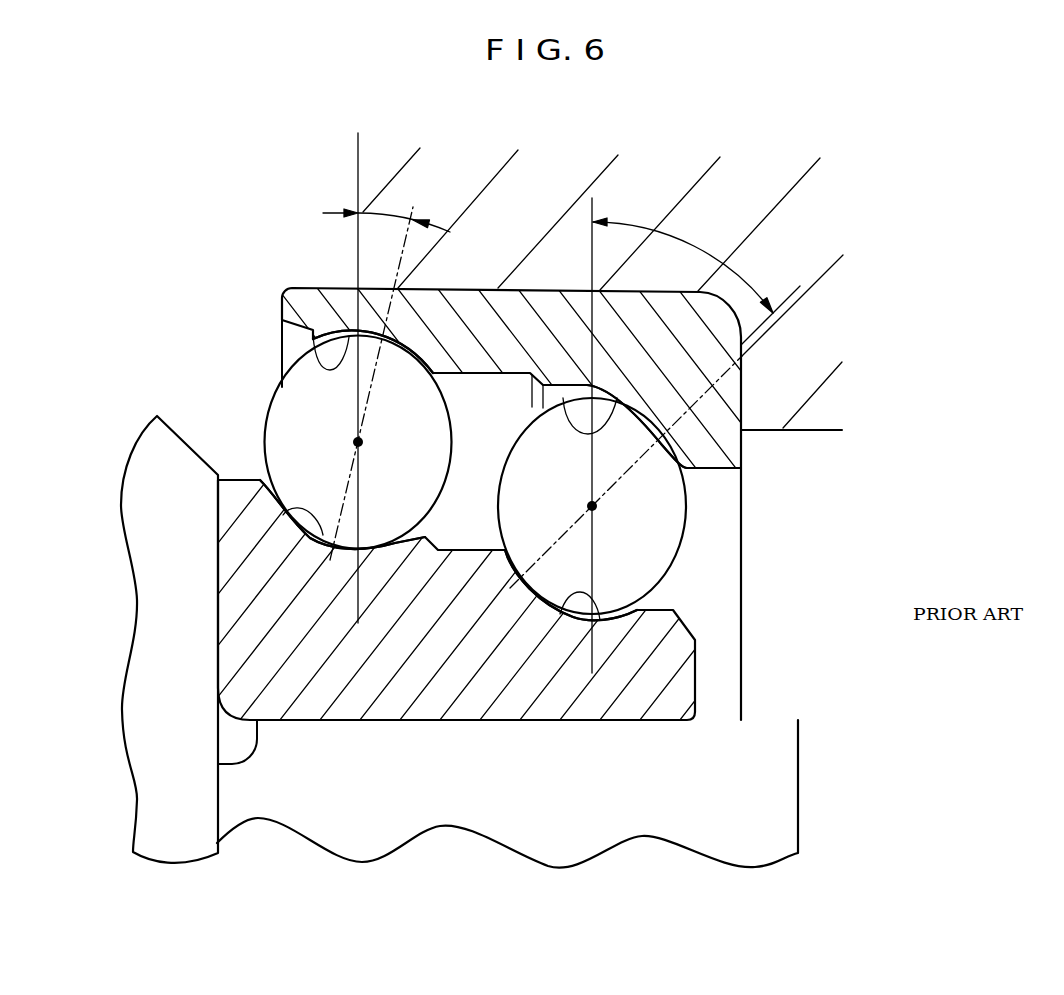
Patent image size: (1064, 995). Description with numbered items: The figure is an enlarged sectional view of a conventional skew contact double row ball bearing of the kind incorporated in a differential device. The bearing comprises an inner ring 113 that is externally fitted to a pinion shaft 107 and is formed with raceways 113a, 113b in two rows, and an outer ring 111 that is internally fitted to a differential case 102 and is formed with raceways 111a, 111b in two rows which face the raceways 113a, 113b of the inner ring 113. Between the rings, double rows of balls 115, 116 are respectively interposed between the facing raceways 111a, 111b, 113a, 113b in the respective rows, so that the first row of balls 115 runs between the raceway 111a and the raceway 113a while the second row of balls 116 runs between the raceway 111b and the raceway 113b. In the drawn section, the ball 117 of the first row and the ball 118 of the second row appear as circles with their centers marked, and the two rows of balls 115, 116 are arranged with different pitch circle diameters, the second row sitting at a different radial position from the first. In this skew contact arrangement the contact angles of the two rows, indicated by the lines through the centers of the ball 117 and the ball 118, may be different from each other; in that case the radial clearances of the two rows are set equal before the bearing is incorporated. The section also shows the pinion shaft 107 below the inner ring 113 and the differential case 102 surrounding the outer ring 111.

The differential case 102 is at (805, 335).
The pinion shaft 107 is at (762, 733).
The outer ring 111 is at (480, 305).
The raceway of the outer ring (first row) 111a is at (276, 386).
The raceway of the outer ring (second row) 111b is at (573, 400).
The inner ring 113 is at (447, 718).
The raceway of the inner ring (first row) 113a is at (287, 513).
The raceway of the inner ring (second row) 113b is at (598, 612).
The balls (first row) 115 is at (277, 442).
The balls (second row) 116 is at (685, 510).
The ball (first row) 117 is at (290, 400).
The ball (second row) 118 is at (643, 572).